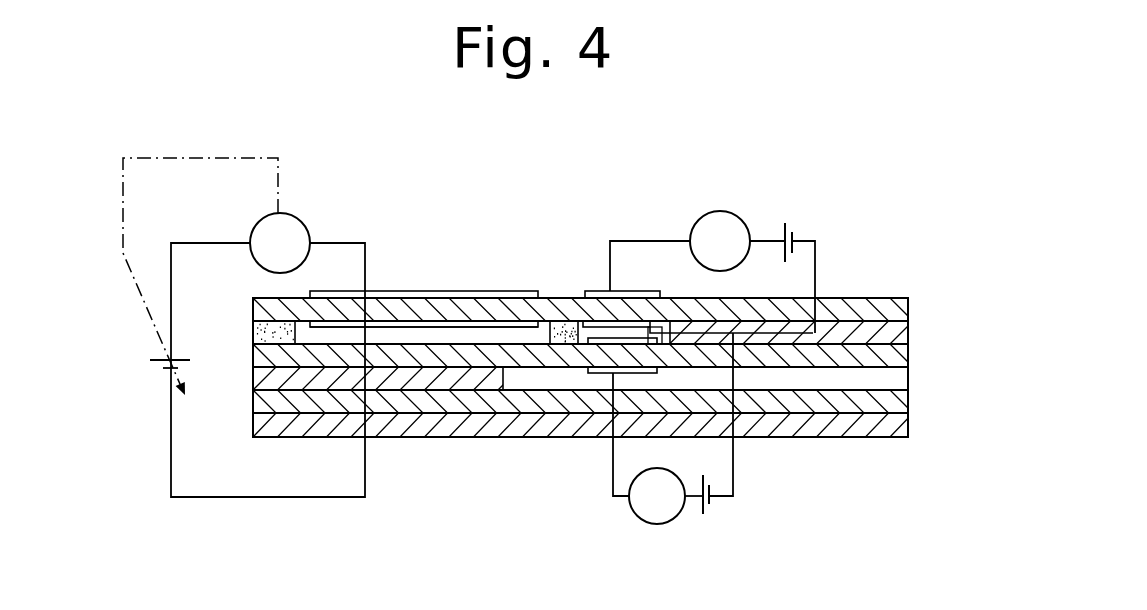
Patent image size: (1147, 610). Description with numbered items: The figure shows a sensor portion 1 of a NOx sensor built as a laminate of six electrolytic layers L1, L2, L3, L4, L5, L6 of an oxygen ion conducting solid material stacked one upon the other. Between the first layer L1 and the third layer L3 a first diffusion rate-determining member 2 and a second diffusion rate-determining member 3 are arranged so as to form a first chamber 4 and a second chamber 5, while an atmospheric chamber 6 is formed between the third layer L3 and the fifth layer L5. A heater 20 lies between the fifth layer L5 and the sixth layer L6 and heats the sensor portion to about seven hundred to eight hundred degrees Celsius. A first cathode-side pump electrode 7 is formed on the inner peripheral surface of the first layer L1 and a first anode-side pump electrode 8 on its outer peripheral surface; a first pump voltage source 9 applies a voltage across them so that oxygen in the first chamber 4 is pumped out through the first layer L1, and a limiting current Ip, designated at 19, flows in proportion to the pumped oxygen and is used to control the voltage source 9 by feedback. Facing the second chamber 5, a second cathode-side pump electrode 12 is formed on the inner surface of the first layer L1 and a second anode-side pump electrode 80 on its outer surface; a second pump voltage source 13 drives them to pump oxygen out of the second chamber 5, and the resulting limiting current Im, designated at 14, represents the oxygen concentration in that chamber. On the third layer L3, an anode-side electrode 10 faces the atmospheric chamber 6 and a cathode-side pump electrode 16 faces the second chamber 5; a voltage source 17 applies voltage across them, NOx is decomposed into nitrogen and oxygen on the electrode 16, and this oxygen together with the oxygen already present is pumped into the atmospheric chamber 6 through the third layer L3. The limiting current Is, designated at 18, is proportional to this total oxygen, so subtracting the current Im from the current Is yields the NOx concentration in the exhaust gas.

The sensor portion 1 is at (896, 262).
The first diffusion rate-determining member 2 is at (253, 330).
The second diffusion rate-determining member 3 is at (562, 321).
The first chamber 4 is at (392, 338).
The second chamber 5 is at (620, 338).
The atmospheric chamber 6 is at (858, 377).
The first cathode-side pump electrode 7 is at (412, 322).
The first anode-side pump electrode 8 is at (378, 290).
The first pump voltage source 9 is at (167, 353).
The anode-side electrode 10 is at (592, 373).
The second cathode-side pump electrode 12 is at (667, 330).
The second pump voltage source 13 is at (795, 225).
The limiting current Im 14 is at (725, 212).
The cathode-side pump electrode 16 is at (632, 340).
The voltage source 17 is at (712, 511).
The limiting current Is 18 is at (660, 524).
The limiting current Ip 19 is at (261, 219).
The heater 20 is at (447, 413).
The second anode-side pump electrode 80 is at (598, 290).
The first layer L1 is at (908, 304).
The second layer L2 is at (908, 332).
The third layer L3 is at (908, 359).
The fourth layer L4 is at (257, 376).
The fifth layer L5 is at (908, 392).
The sixth layer L6 is at (908, 420).